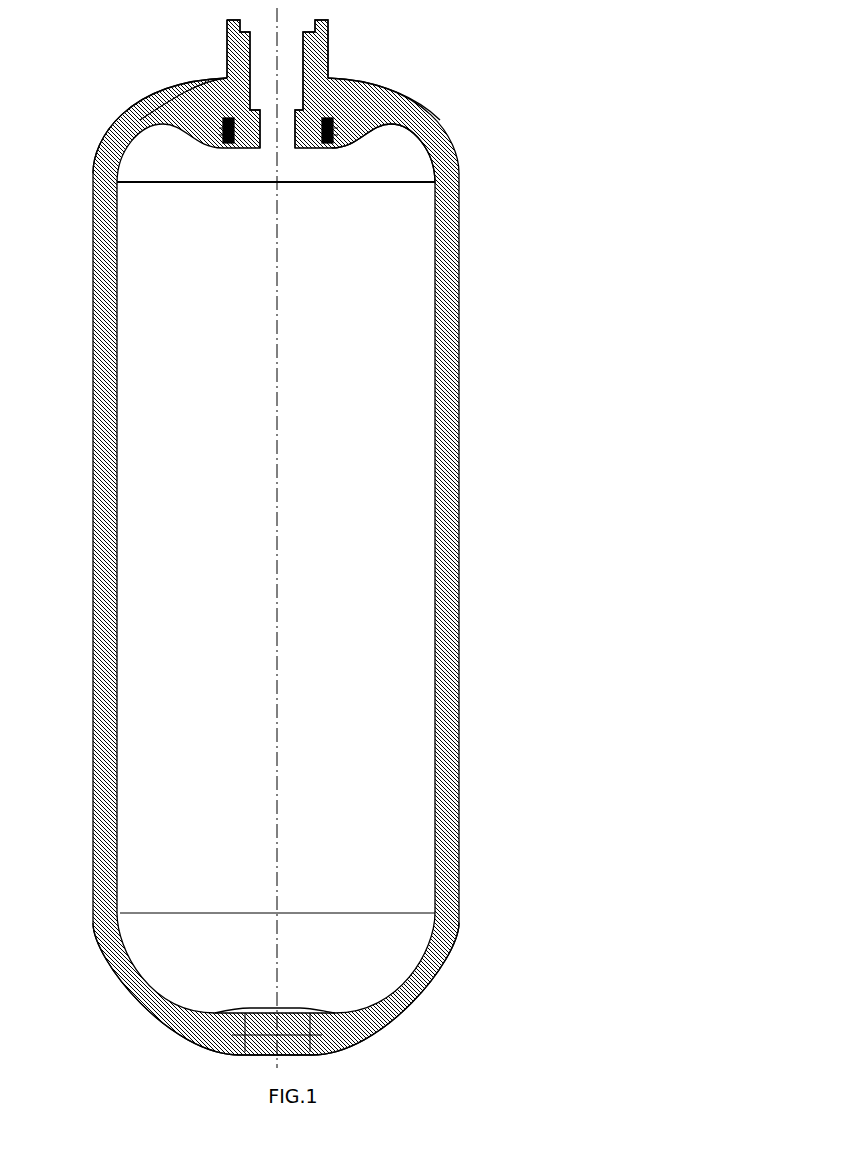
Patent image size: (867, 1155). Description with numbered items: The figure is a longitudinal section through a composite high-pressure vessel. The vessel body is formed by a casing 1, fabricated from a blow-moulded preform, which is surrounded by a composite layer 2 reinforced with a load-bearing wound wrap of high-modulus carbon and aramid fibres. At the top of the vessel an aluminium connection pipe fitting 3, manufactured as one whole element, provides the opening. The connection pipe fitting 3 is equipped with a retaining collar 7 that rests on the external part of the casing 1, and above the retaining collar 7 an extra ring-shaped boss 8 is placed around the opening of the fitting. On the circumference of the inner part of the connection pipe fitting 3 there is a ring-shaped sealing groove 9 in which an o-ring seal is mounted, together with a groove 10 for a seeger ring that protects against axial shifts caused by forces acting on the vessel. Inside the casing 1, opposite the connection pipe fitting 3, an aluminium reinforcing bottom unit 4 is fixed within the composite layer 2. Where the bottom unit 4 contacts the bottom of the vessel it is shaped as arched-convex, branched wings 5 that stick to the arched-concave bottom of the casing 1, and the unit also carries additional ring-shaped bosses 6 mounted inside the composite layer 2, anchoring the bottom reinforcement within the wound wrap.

The casing 1 is at (150, 273).
The composite layer 2 is at (93, 322).
The connection pipe fitting 3 is at (220, 37).
The reinforcing bottom unit 4 is at (275, 1031).
The branched wings 5 is at (395, 1013).
The ring-shaped bosses 6 is at (280, 1042).
The retaining collar 7 is at (367, 135).
The ring-shaped boss 8 is at (333, 73).
The sealing groove 9 is at (193, 143).
The groove 10 is at (150, 118).